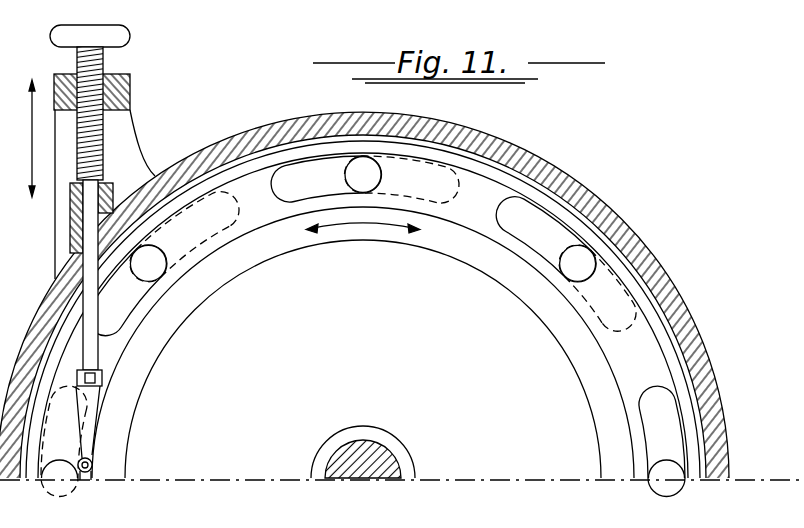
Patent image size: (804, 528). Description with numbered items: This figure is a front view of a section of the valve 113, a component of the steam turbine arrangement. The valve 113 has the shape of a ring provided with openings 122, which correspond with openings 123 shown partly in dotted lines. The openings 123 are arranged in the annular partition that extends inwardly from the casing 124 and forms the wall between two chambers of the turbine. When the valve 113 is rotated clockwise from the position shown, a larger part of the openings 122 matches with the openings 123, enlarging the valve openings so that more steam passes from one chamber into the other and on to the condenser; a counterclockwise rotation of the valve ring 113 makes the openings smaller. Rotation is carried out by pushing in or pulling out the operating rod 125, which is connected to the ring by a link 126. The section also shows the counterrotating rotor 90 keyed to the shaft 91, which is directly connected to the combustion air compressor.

The operating rod 125 is at (107, 62).
The casing 124 is at (565, 171).
The openings 122 is at (330, 178).
The valve 113 is at (462, 210).
The openings 123 is at (606, 305).
The link 126 is at (90, 402).
The counterrotating rotor 90 is at (176, 468).
The shaft 91 is at (372, 465).